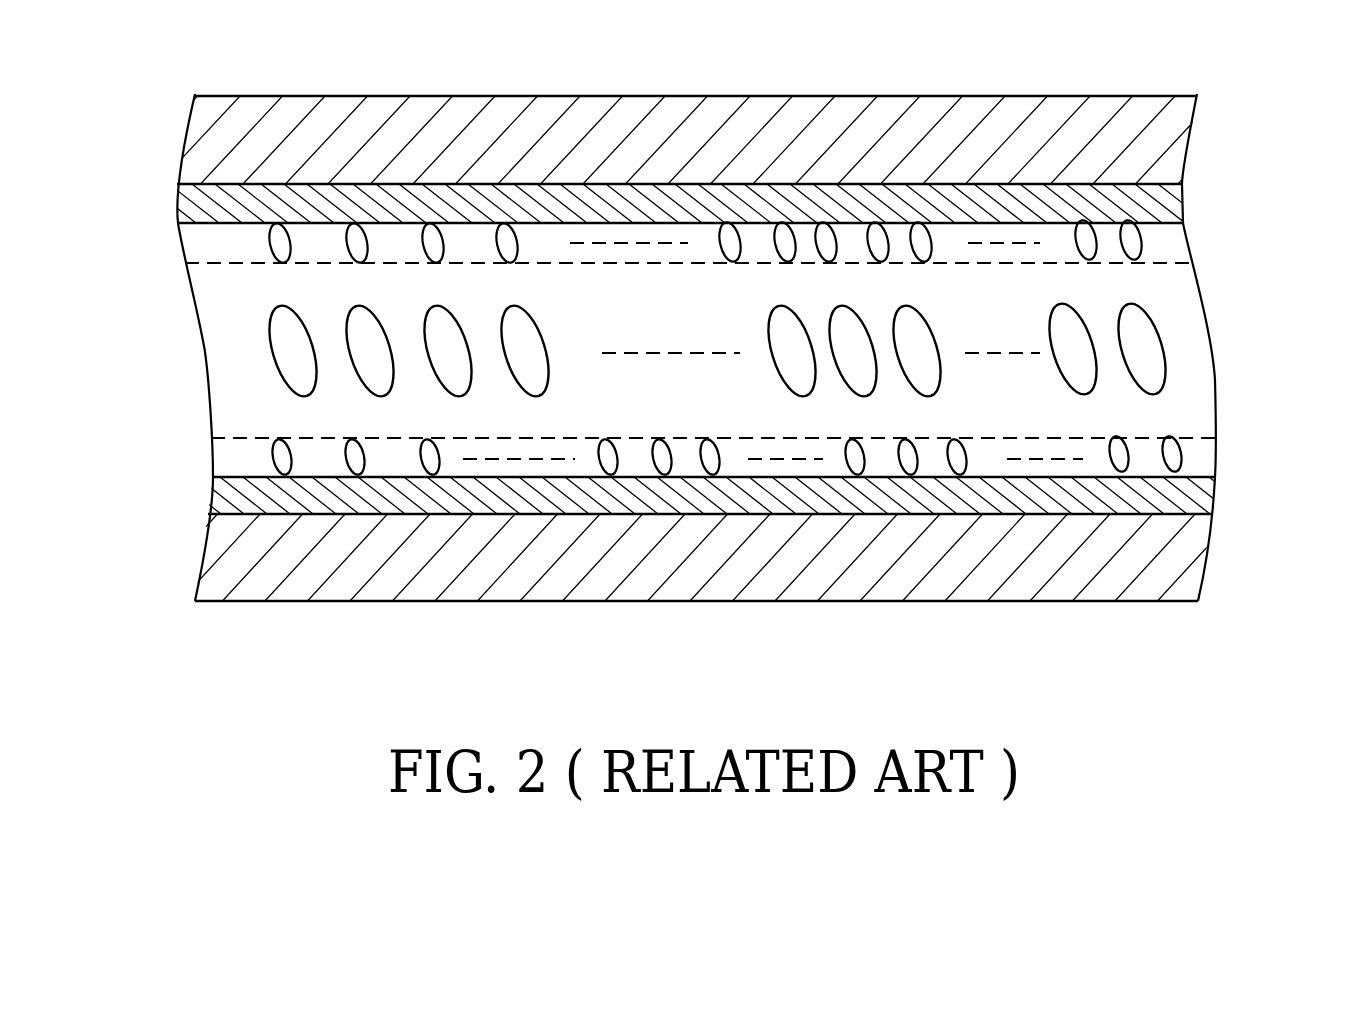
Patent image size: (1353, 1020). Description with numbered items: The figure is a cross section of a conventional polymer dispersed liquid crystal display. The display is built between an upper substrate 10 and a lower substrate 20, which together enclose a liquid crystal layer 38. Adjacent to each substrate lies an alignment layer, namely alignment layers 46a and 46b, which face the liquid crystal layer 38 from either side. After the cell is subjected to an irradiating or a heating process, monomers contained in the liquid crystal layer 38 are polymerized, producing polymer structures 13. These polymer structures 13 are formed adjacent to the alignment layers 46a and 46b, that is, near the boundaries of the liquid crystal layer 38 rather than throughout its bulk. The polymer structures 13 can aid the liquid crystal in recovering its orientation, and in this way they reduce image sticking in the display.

The upper substrate 10 is at (1182, 562).
The lower substrate 20 is at (1163, 131).
The polymer structures 13 is at (1163, 241).
The liquid crystal layer 38 is at (125, 225).
The alignment layer 46a is at (1140, 203).
The alignment layer 46b is at (1167, 497).